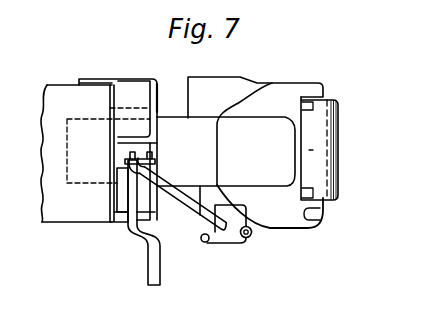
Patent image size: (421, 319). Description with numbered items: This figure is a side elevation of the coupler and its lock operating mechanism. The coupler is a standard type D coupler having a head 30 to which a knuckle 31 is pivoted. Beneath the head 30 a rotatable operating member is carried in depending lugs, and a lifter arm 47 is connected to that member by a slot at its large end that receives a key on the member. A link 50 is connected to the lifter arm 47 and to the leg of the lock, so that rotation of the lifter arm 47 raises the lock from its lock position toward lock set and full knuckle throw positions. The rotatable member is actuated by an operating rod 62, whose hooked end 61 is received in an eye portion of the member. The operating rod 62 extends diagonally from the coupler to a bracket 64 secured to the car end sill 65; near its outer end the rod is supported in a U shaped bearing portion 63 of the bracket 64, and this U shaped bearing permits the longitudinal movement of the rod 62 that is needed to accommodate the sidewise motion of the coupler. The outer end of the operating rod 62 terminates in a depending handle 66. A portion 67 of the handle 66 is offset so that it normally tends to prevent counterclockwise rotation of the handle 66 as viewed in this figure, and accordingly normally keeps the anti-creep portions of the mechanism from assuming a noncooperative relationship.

The head 30 is at (278, 85).
The knuckle 31 is at (332, 153).
The lifter arm 47 is at (235, 242).
The link 50 is at (253, 231).
The hooked end 61 is at (212, 241).
The operating rod 62 is at (172, 200).
The U shaped bearing portion 63 is at (160, 156).
The bracket 64 is at (122, 175).
The car end sill 65 is at (67, 90).
The handle 66 is at (130, 198).
The offset portion 67 is at (152, 255).